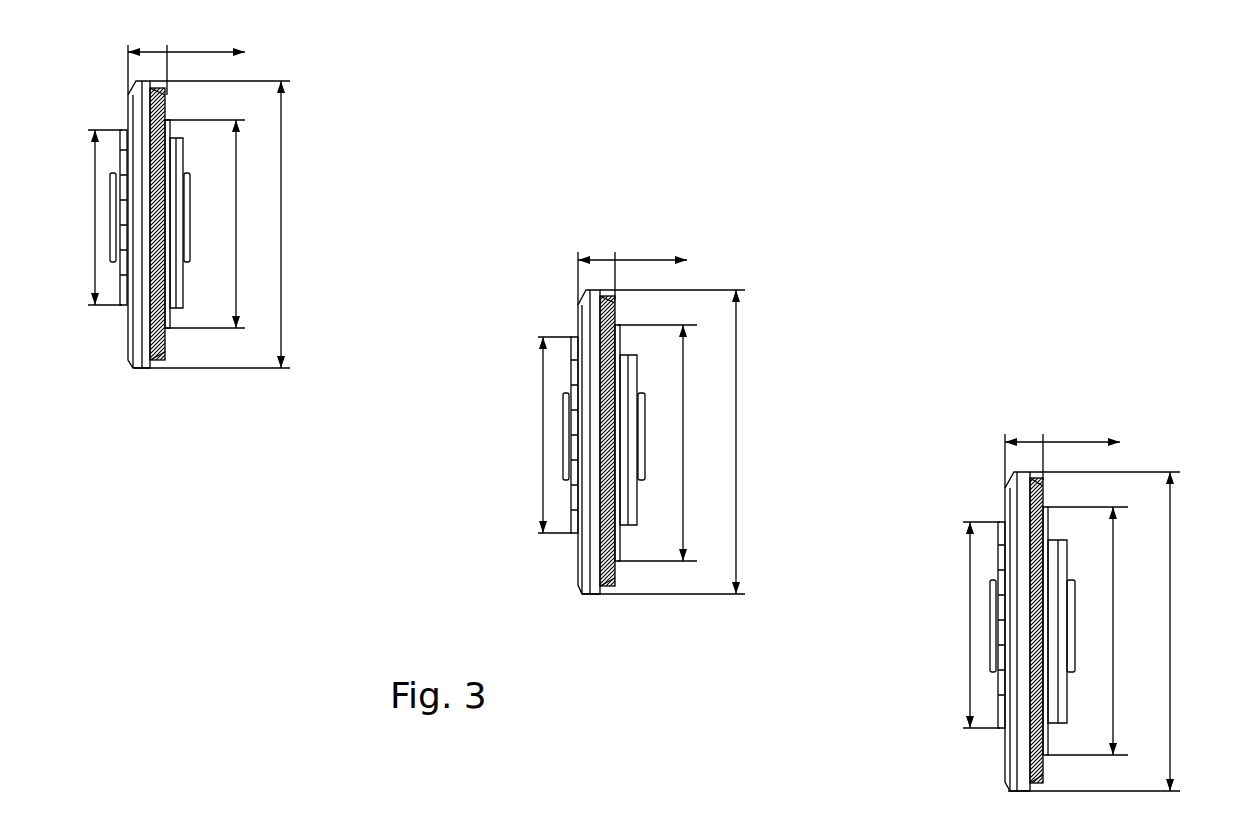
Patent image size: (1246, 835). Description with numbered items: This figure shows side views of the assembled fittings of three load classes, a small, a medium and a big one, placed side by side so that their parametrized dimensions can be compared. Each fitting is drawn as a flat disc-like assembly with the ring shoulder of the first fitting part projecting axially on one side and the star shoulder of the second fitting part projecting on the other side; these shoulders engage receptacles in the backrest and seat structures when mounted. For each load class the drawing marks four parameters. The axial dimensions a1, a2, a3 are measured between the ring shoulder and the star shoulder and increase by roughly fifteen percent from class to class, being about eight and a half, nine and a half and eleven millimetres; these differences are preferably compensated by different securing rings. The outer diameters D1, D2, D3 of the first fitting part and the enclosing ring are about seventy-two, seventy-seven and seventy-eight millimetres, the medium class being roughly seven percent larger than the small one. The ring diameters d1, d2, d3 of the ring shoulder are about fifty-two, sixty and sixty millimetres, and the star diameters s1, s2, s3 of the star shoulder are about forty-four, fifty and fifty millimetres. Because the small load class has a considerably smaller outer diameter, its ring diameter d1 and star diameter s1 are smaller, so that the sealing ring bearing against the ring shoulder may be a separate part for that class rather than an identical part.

The axial dimension a1 is at (186, 50).
The star diameter s1 is at (90, 217).
The ring diameter d1 is at (222, 224).
The outer diameter D1 is at (232, 224).
The axial dimension a2 is at (632, 257).
The star diameter s2 is at (539, 435).
The ring diameter d2 is at (675, 443).
The outer diameter D2 is at (685, 442).
The axial dimension a3 is at (1062, 439).
The star diameter s3 is at (965, 625).
The ring diameter d3 is at (1099, 631).
The outer diameter D3 is at (1112, 631).